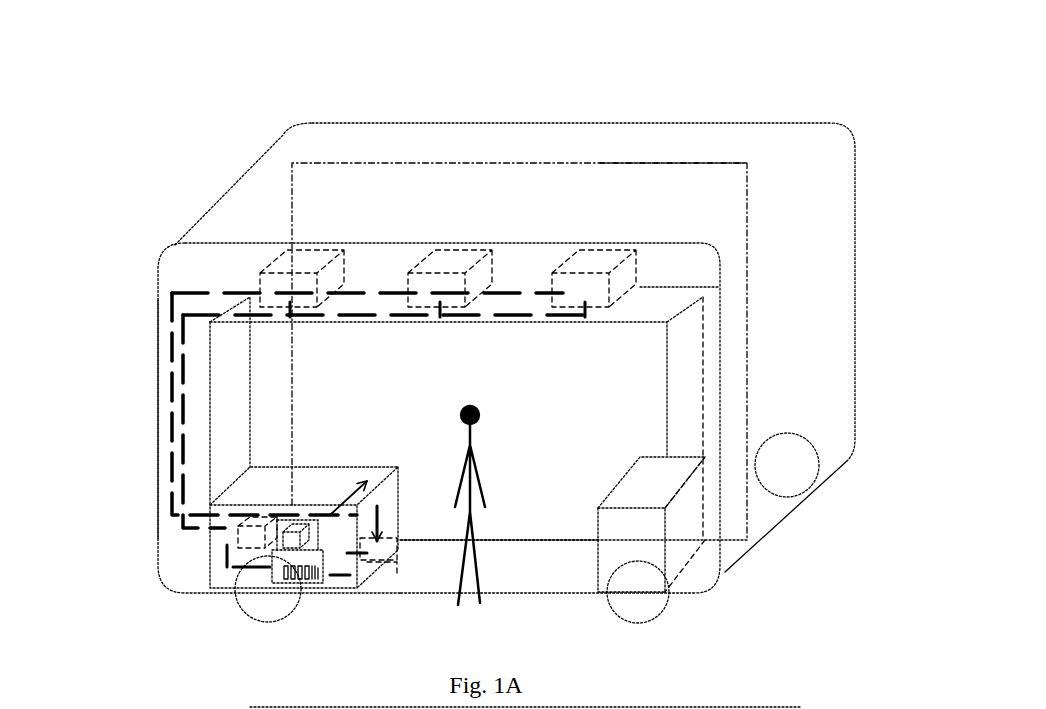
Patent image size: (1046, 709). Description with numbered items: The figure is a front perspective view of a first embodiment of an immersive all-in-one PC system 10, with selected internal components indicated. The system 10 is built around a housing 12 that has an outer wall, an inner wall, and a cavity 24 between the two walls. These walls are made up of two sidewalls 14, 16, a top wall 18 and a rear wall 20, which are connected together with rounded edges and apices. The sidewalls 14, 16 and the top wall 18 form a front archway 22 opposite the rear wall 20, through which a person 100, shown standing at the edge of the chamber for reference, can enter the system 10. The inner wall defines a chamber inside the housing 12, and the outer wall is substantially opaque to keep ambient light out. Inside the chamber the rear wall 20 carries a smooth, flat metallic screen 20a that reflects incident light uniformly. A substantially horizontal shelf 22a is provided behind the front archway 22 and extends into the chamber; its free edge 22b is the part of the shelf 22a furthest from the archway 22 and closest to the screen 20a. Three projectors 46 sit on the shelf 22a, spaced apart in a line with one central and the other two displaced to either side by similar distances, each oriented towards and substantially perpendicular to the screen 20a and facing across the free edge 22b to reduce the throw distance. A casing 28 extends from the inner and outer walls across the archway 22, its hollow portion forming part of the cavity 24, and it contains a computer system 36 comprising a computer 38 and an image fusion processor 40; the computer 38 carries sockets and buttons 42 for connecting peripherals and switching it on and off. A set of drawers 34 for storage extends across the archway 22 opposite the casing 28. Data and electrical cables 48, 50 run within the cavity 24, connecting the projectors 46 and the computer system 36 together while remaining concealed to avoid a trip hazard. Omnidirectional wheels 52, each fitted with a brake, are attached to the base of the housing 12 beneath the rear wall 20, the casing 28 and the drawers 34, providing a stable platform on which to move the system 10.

The immersive all-in-one PC system 10 is at (118, 158).
The housing 12 is at (170, 251).
The sidewall 14 is at (158, 385).
The sidewall 16 is at (802, 357).
The top wall 18 is at (621, 178).
The rear wall 20 is at (708, 162).
The metallic screen 20a is at (517, 516).
The front archway 22 is at (640, 321).
The shelf 22a is at (658, 297).
The free edge 22b is at (643, 286).
The cavity 24 is at (201, 429).
The casing 28 is at (320, 464).
The drawers 34 is at (648, 523).
The computer system 36 is at (348, 610).
The computer 38 is at (334, 532).
The image fusion processor 40 is at (222, 536).
The sockets and buttons 42 is at (312, 583).
The projectors 46 is at (581, 262).
The data cable 48 is at (180, 337).
The electrical cable 50 is at (180, 290).
The wheels 52 is at (256, 611).
The person 100 is at (462, 564).